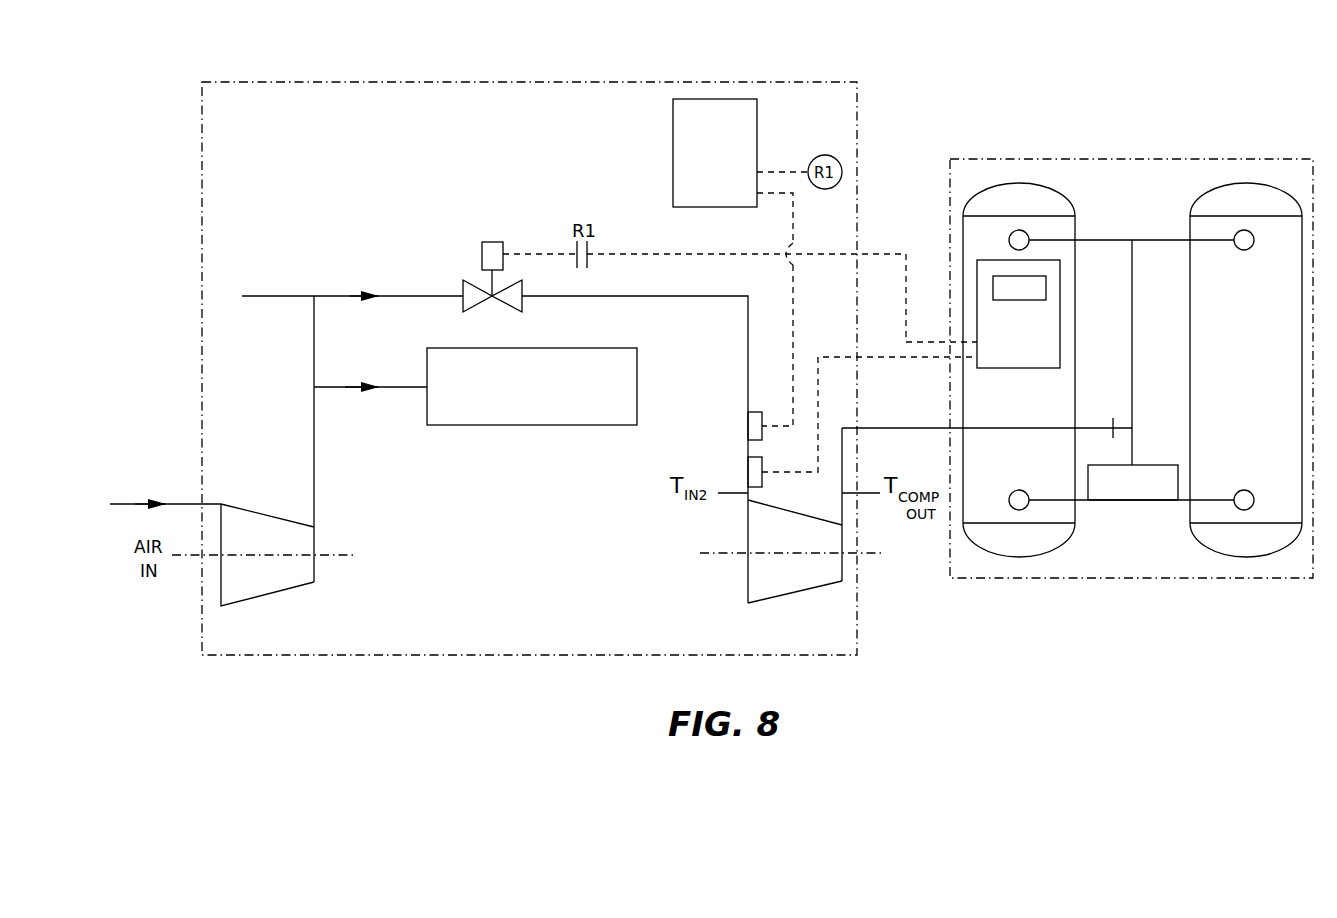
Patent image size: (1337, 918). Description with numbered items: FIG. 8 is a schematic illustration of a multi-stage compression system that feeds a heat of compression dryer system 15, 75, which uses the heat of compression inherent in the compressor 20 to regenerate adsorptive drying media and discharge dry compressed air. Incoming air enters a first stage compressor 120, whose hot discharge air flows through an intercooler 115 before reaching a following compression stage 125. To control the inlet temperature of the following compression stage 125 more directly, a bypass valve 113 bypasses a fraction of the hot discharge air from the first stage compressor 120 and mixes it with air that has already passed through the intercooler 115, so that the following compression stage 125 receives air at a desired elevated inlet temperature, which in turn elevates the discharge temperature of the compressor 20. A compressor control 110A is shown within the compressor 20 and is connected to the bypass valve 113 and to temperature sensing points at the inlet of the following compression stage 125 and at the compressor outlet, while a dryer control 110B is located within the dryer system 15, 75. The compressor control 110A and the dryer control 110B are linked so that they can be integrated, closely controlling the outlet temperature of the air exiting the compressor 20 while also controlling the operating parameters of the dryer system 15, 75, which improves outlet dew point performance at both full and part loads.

The compression machine 20 is at (436, 58).
The compressor control 110A is at (714, 122).
The bypass valve 113 is at (475, 280).
The intercooler 115 is at (527, 413).
The first stage compressor 120 is at (285, 583).
The following compression stage 125 is at (757, 577).
The dryer control 110B is at (1045, 322).
The heat of compression dryer system 15 is at (1172, 133).
The dryer system 75 is at (1131, 368).